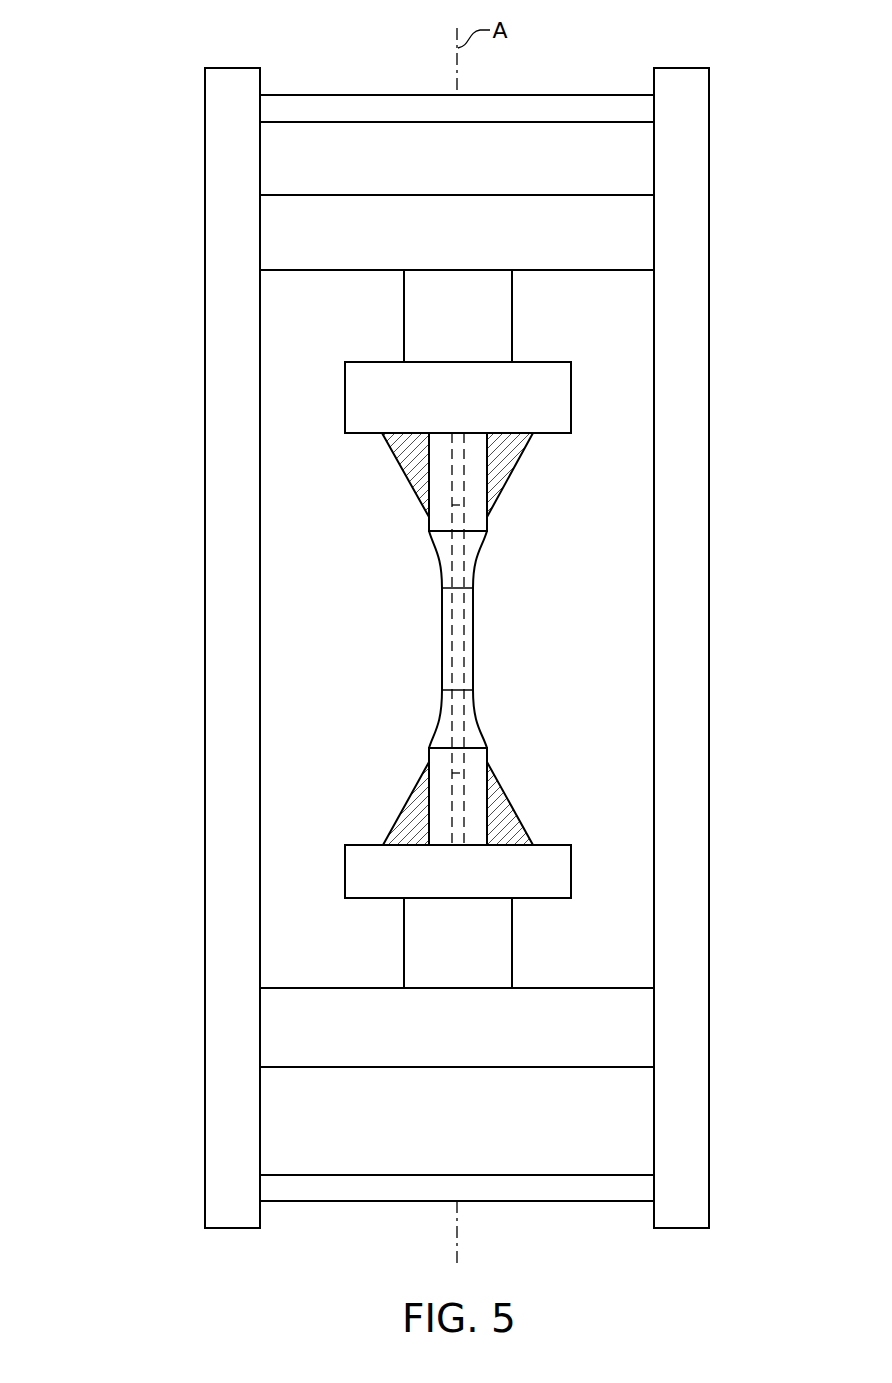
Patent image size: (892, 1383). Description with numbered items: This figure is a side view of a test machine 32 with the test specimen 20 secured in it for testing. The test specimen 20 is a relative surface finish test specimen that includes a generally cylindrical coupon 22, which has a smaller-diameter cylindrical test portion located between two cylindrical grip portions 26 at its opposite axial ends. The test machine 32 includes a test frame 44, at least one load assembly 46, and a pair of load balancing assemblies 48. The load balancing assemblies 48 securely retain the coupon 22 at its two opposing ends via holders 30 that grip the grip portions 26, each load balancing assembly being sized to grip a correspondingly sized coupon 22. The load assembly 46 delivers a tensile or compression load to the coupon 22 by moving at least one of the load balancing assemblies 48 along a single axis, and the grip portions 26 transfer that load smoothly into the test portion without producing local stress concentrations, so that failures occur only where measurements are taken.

The test specimen 20 is at (419, 617).
The coupon 22 is at (435, 635).
The grip portions 26 is at (437, 445).
The holders 30 is at (500, 470).
The test machine 32 is at (475, 642).
The test frame 44 is at (710, 150).
The load assembly 46 is at (362, 203).
The load balancing assemblies 48 is at (351, 395).